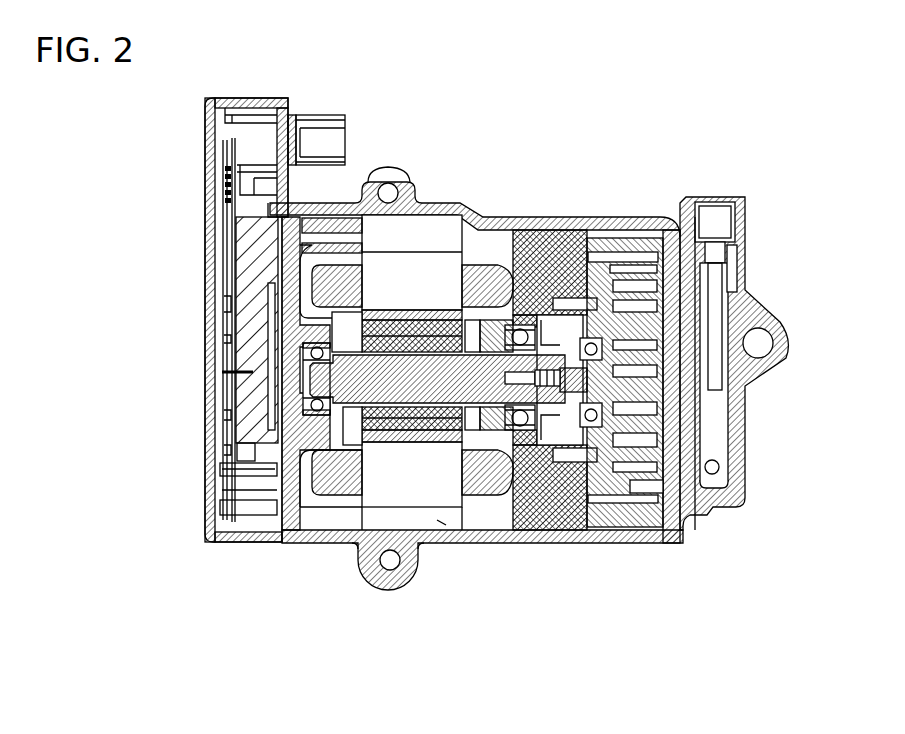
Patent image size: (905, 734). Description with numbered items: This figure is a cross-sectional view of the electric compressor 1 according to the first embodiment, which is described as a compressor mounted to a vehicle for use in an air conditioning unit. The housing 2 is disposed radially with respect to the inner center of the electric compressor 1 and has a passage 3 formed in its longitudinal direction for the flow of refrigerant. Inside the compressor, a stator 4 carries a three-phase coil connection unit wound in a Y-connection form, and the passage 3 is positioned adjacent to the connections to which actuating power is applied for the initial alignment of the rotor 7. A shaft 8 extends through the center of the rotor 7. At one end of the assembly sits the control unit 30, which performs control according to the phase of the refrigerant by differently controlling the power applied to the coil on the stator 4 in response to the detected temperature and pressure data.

The electric compressor 1 is at (631, 121).
The housing 2 is at (307, 548).
The passage 3 is at (440, 527).
The stator 4 is at (372, 483).
The rotor 7 is at (410, 420).
The shaft 8 is at (347, 392).
The control unit 30 is at (255, 521).